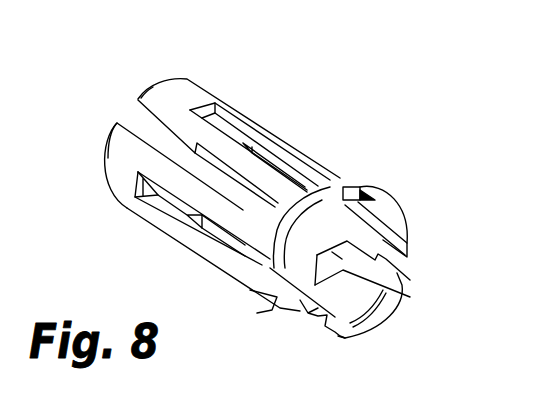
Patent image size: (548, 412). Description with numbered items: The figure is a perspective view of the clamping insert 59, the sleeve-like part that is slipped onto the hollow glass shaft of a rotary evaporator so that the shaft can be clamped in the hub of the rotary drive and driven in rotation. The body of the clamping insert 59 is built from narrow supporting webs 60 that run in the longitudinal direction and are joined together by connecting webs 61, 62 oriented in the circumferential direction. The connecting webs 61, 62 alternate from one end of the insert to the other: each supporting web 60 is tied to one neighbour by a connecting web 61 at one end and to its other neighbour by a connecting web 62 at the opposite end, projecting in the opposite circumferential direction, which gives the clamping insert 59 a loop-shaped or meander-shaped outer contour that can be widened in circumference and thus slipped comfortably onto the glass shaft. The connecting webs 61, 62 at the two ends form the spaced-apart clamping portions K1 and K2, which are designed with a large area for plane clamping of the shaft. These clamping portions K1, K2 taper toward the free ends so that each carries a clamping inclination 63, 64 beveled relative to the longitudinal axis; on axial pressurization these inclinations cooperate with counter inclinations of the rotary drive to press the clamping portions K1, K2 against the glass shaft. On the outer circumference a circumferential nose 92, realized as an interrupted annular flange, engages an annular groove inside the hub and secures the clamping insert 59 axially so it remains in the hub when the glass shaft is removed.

The clamping insert 59 is at (329, 110).
The supporting web 60 is at (230, 150).
The connecting web 61 is at (117, 172).
The connecting web 62 is at (303, 234).
The clamping inclination 63 is at (148, 88).
The clamping inclination 64 is at (383, 218).
The circumferential nose 92 is at (352, 188).
The clamping portion K1 is at (170, 72).
The clamping portion K2 is at (425, 210).